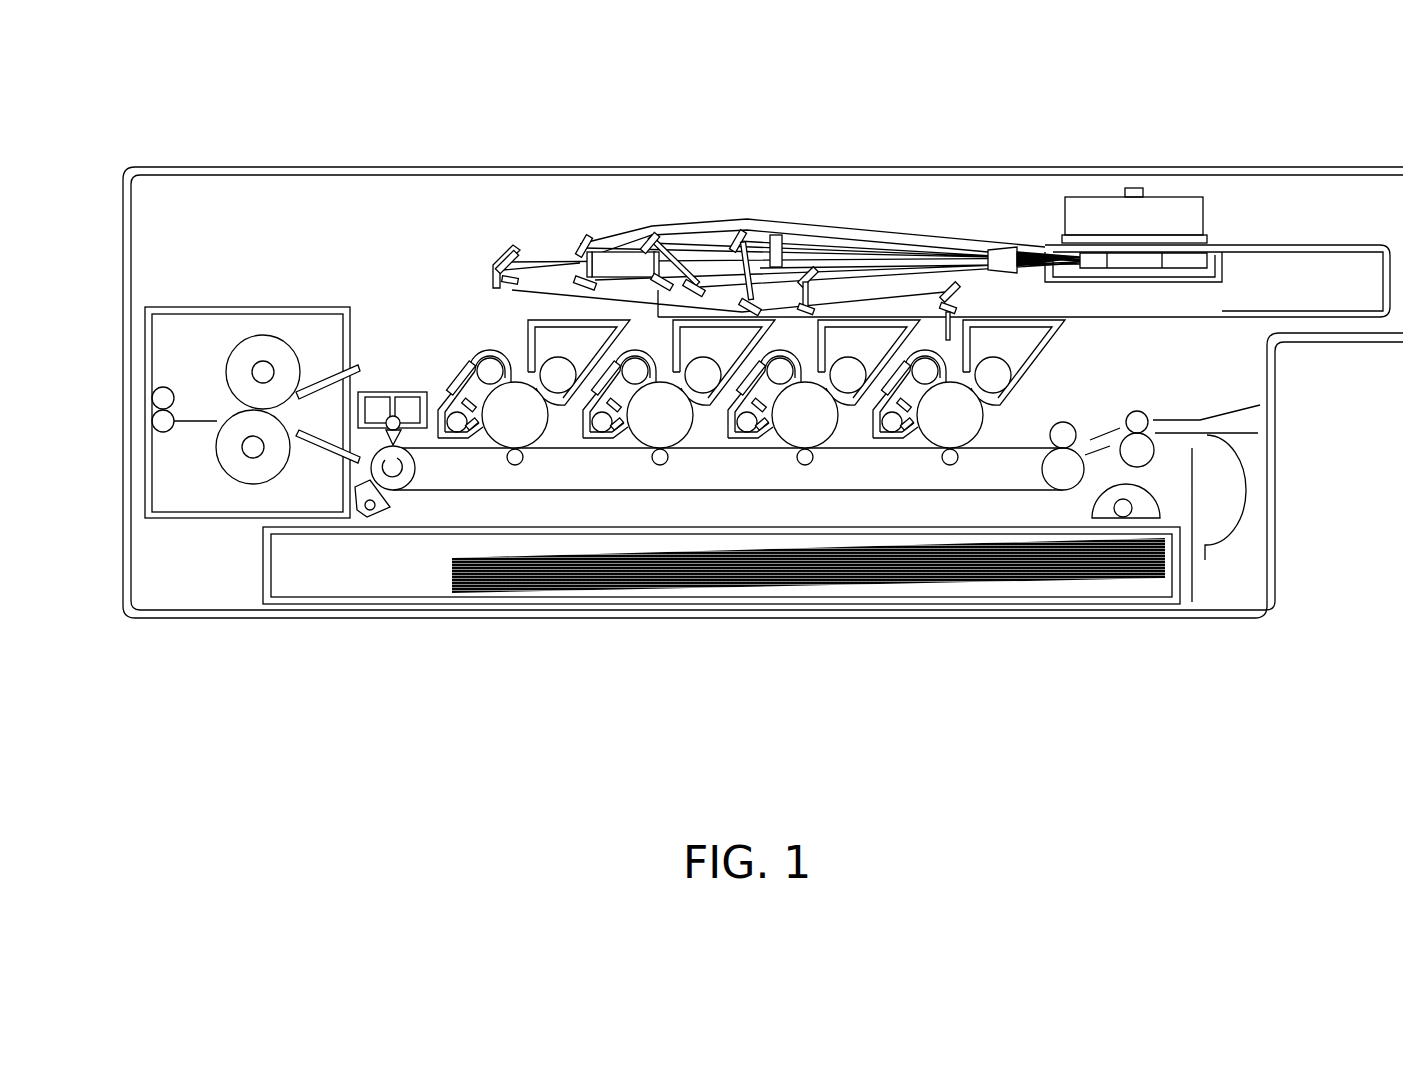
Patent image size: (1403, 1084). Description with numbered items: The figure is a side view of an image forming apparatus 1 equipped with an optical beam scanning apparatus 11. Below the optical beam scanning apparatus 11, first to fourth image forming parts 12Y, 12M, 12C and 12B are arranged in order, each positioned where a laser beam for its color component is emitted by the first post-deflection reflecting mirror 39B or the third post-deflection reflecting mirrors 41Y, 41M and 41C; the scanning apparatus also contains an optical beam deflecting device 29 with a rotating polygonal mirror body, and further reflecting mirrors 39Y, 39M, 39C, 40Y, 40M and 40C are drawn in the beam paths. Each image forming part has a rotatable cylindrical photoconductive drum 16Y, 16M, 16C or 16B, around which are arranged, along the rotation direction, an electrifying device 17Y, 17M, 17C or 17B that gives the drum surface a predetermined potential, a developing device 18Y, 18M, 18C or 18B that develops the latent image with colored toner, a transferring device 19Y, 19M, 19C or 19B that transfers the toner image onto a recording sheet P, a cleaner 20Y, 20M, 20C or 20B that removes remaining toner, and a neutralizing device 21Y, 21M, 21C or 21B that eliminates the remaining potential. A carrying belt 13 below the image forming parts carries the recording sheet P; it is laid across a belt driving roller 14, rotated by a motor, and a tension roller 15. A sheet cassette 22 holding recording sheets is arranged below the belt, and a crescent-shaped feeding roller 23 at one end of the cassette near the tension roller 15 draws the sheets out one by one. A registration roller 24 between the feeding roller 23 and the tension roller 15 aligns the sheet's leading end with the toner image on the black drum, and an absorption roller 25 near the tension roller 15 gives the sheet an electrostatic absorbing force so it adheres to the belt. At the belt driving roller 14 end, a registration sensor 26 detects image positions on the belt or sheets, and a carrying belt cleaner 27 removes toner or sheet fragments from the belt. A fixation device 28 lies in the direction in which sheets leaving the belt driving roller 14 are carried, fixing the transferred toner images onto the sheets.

The image forming apparatus 1 is at (868, 698).
The optical beam scanning apparatus 11 is at (1212, 318).
The fourth image forming part 12B is at (579, 362).
The third image forming part 12C is at (724, 362).
The second image forming part 12M is at (869, 362).
The first image forming part 12Y is at (1014, 362).
The carrying belt 13 is at (1018, 446).
The belt driving roller 14 is at (402, 490).
The tension roller 15 is at (1045, 483).
The photoconductive drum 16B is at (521, 454).
The photoconductive drum 16C is at (663, 454).
The photoconductive drum 16M is at (812, 454).
The photoconductive drum 16Y is at (965, 454).
The electrifying device 17B is at (489, 342).
The electrifying device 17C is at (641, 343).
The electrifying device 17M is at (786, 352).
The electrifying device 17Y is at (952, 333).
The developing device 18B is at (558, 420).
The developing device 18C is at (705, 420).
The developing device 18M is at (850, 420).
The developing device 18Y is at (999, 420).
The transferring device 19B is at (495, 487).
The transferring device 19C is at (641, 487).
The transferring device 19M is at (790, 487).
The transferring device 19Y is at (937, 487).
The cleaner 20B is at (465, 427).
The cleaner 20C is at (610, 427).
The cleaner 20M is at (755, 427).
The cleaner 20Y is at (900, 427).
The neutralizing device 21B is at (452, 380).
The neutralizing device 21C is at (599, 363).
The neutralizing device 21M is at (744, 445).
The neutralizing device 21Y is at (889, 445).
The sheet cassette 22 is at (1012, 600).
The feeding roller 23 is at (1160, 498).
The registration roller 24 is at (1137, 411).
The absorption roller 25 is at (1064, 421).
The registration sensor 26 is at (393, 392).
The carrying belt cleaner 27 is at (365, 515).
The fixation device 28 is at (165, 498).
The optical beam deflecting device 29 is at (1205, 215).
The first post-deflection reflecting mirror 39B is at (498, 258).
The post-deflection reflecting mirror 39C is at (570, 248).
The post-deflection reflecting mirror 39M is at (635, 245).
The post-deflection reflecting mirror 39Y is at (740, 235).
The post-deflection reflecting mirror 40C is at (563, 275).
The post-deflection reflecting mirror 40M is at (685, 280).
The post-deflection reflecting mirror 40Y is at (737, 298).
The third post-deflection reflecting mirror 41C is at (637, 255).
The third post-deflection reflecting mirror 41M is at (818, 265).
The third post-deflection reflecting mirror 41Y is at (950, 285).
The recording sheet P is at (940, 585).